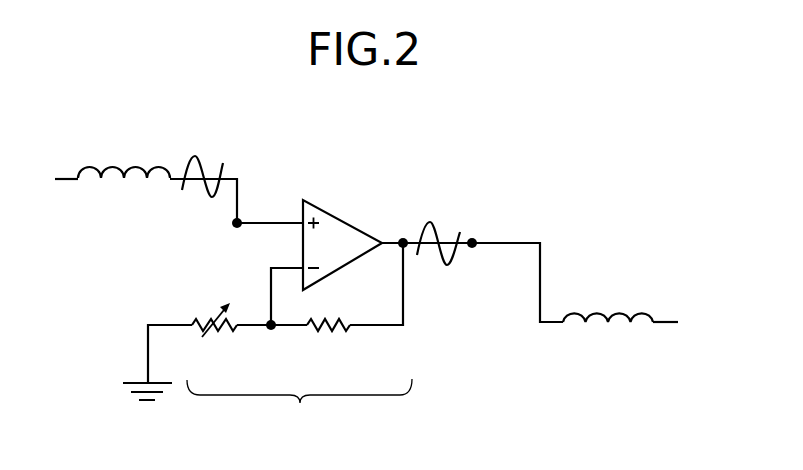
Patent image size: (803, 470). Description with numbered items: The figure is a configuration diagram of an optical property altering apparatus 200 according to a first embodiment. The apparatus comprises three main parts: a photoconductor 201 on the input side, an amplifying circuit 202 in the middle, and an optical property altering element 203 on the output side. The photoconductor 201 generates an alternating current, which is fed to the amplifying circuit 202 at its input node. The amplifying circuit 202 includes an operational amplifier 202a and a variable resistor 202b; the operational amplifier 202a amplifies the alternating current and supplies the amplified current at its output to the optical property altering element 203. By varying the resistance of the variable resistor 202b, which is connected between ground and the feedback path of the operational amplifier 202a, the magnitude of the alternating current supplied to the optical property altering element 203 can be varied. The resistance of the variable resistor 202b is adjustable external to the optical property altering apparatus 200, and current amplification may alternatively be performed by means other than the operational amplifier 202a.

The optical property altering apparatus 200 is at (518, 119).
The photoconductor 201 is at (113, 167).
The amplifying circuit 202 is at (299, 375).
The operational amplifier 202a is at (331, 216).
The variable resistor 202b is at (205, 323).
The optical property altering element 203 is at (618, 310).